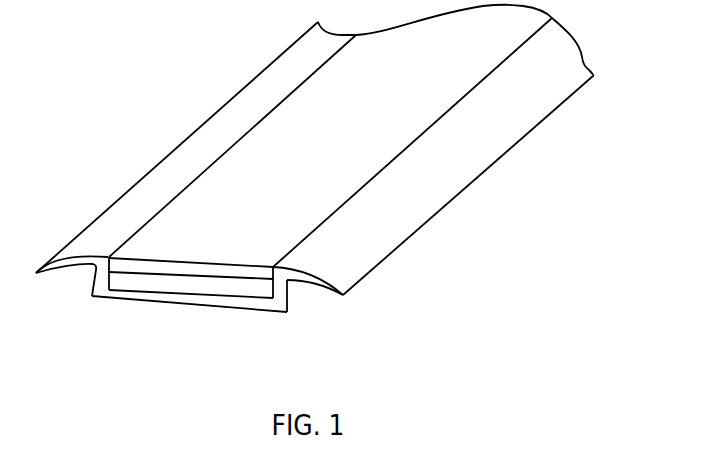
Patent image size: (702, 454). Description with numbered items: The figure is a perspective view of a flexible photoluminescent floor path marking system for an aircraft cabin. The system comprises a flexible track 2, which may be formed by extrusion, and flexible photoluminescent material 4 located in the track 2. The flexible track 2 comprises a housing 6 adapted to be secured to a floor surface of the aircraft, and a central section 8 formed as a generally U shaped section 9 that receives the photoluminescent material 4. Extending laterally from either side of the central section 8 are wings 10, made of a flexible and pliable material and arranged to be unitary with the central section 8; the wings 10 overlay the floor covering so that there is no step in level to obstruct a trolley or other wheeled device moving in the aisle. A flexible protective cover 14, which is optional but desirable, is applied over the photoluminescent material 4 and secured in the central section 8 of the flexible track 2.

The flexible track 2 is at (248, 115).
The photoluminescent material 4 is at (263, 290).
The housing 6 is at (253, 305).
The central section 8 is at (72, 306).
The U shaped section 9 is at (148, 298).
The wings 10 is at (120, 220).
The flexible protective cover 14 is at (198, 213).